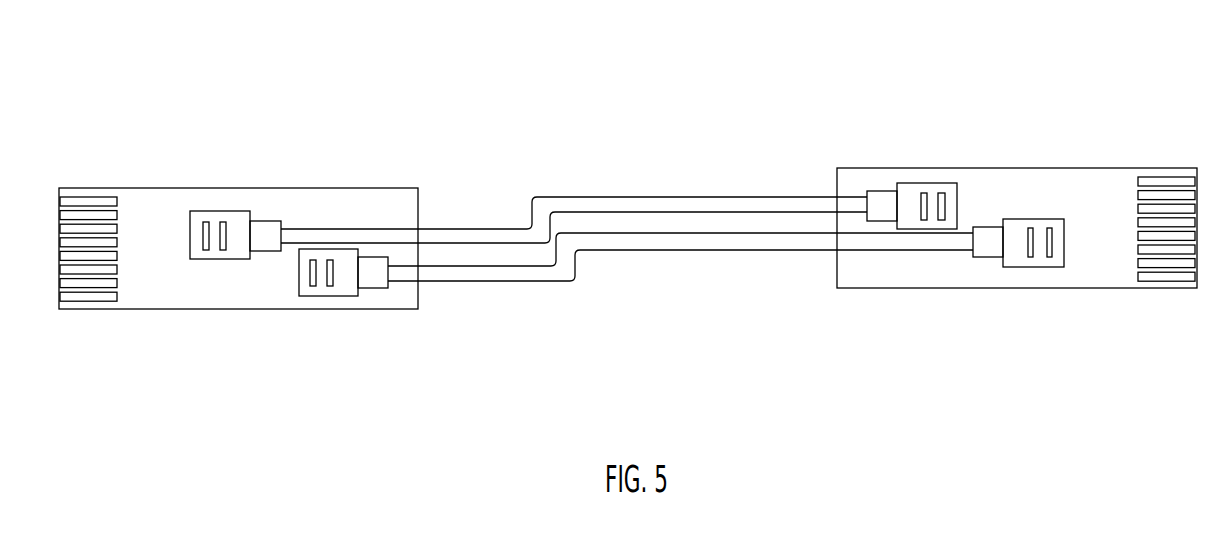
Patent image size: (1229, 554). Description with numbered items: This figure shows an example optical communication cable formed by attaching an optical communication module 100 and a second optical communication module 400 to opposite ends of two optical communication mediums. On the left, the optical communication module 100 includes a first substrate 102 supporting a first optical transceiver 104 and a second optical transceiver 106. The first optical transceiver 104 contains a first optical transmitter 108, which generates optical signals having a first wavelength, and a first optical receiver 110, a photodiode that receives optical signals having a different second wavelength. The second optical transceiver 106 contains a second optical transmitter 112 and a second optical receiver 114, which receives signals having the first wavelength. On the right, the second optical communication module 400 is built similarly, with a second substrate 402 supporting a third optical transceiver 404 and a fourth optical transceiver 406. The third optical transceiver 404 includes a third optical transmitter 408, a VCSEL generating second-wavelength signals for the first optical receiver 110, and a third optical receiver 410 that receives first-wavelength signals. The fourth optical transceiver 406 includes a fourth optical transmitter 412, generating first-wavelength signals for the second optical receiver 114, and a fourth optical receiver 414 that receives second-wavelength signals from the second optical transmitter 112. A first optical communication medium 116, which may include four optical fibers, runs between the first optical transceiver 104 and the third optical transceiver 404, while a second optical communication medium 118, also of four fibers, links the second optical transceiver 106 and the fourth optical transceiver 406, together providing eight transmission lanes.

The optical communication module 100 is at (278, 57).
The first substrate 102 is at (145, 195).
The first optical transceiver 104 is at (196, 207).
The second optical transceiver 106 is at (297, 296).
The first optical transmitter 108 is at (207, 216).
The first optical receiver 110 is at (229, 215).
The second optical transmitter 112 is at (337, 284).
The second optical receiver 114 is at (318, 291).
The first optical communication medium 116 is at (531, 195).
The second optical communication medium 118 is at (574, 284).
The second optical communication module 400 is at (1033, 37).
The second substrate 402 is at (1128, 171).
The third optical transceiver 404 is at (956, 172).
The fourth optical transceiver 406 is at (1063, 270).
The third optical transmitter 408 is at (921, 187).
The third optical receiver 410 is at (942, 187).
The fourth optical transmitter 412 is at (1049, 264).
The fourth optical receiver 414 is at (1029, 264).